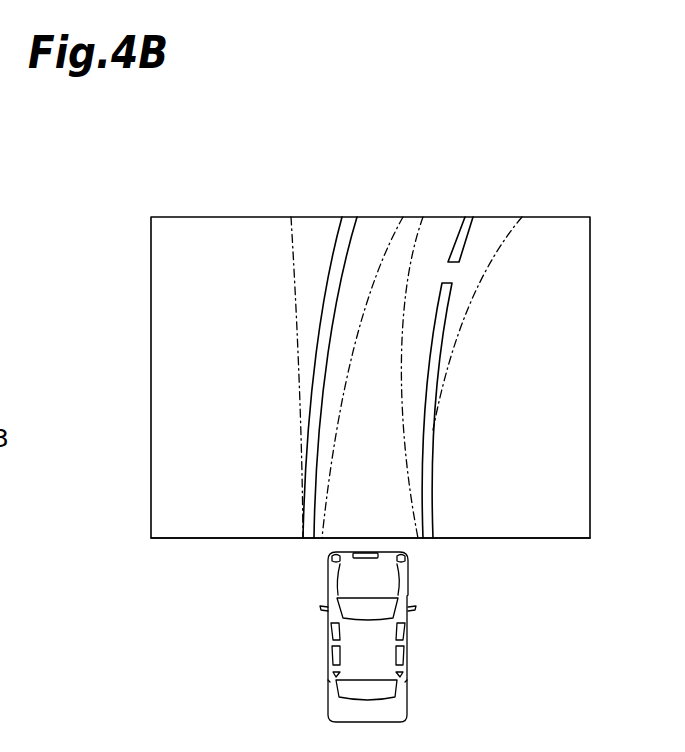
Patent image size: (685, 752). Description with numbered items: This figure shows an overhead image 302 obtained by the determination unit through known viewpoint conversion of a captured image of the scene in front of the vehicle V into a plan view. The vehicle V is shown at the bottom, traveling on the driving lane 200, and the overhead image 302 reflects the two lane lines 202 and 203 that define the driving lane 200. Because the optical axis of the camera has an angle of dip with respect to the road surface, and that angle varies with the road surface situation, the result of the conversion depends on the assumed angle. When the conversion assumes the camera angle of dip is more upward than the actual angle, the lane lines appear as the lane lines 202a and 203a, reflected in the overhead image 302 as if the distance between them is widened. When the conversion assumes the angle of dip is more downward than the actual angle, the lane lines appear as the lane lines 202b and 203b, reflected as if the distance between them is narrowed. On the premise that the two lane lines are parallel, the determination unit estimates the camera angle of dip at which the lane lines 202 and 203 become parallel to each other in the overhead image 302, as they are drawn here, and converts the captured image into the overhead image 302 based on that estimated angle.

The overhead image 302 is at (200, 216).
The driving lane 200 is at (373, 500).
The lane line 202 is at (350, 216).
The lane line 202a is at (292, 267).
The lane line 202b is at (395, 236).
The lane line 203 is at (470, 216).
The lane line 203a is at (483, 282).
The lane line 203b is at (413, 240).
The vehicle V is at (408, 645).